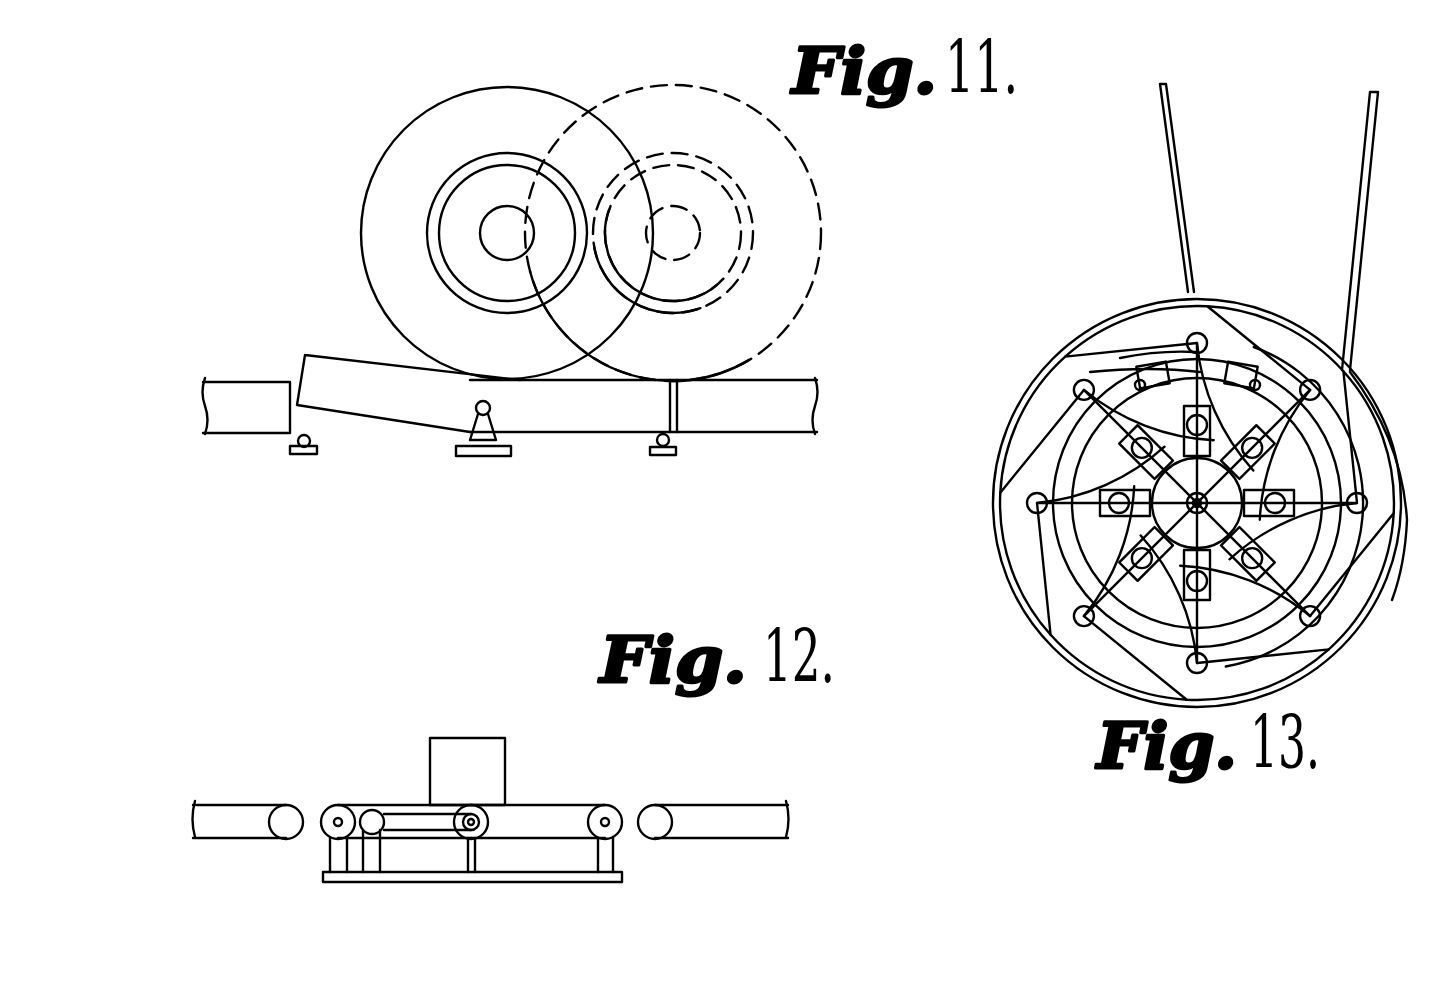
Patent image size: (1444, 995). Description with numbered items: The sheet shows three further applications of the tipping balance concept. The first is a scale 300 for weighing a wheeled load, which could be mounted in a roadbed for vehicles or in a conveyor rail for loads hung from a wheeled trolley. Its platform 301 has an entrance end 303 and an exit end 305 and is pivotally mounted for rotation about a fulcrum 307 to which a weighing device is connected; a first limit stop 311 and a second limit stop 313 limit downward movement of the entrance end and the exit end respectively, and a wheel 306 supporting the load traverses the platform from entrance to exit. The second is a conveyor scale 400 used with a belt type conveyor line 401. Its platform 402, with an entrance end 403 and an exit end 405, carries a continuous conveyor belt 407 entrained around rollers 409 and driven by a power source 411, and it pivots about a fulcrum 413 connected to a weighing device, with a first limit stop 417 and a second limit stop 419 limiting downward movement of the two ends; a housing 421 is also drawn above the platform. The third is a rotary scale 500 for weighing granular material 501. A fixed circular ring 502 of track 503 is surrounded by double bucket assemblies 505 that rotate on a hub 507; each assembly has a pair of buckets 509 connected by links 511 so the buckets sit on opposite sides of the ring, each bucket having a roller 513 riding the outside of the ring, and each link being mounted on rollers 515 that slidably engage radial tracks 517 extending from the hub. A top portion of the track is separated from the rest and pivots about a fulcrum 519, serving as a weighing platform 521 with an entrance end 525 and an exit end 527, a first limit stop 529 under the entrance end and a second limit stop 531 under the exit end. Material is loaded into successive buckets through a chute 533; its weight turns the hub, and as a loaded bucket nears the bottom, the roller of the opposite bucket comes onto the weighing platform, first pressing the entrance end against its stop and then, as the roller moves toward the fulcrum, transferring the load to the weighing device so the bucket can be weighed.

In FIG. 11, the scale 300 is at (296, 205).
In FIG. 11, the platform 301 is at (573, 432).
In FIG. 11, the entrance end 303 is at (305, 357).
In FIG. 11, the exit end 305 is at (681, 396).
In FIG. 11, the wheel 306 is at (404, 130).
In FIG. 11, the fulcrum 307 is at (475, 408).
In FIG. 11, the first limit stop 311 is at (303, 454).
In FIG. 11, the second limit stop 313 is at (665, 457).
In FIG. 12, the conveyor scale 400 is at (318, 696).
In FIG. 12, the belt type conveyor line 401 is at (230, 803).
In FIG. 12, the platform 402 is at (548, 803).
In FIG. 12, the entrance end 403 is at (324, 812).
In FIG. 12, the exit end 405 is at (622, 810).
In FIG. 12, the continuous conveyor belt 407 is at (404, 803).
In FIG. 12, the rollers 409 is at (596, 824).
In FIG. 12, the power source 411 is at (386, 855).
In FIG. 12, the fulcrum 413 is at (482, 830).
In FIG. 12, the first limit stop 417 is at (328, 852).
In FIG. 12, the second limit stop 419 is at (616, 855).
In FIG. 12, the housing 421 is at (478, 738).
In FIG. 13, the rotary scale 500 is at (1036, 288).
In FIG. 13, the granular material 501 is at (1335, 432).
In FIG. 13, the fixed circular ring 502 is at (1040, 548).
In FIG. 13, the track 503 is at (1044, 618).
In FIG. 13, the double bucket assemblies 505 is at (1158, 342).
In FIG. 13, the hub 507 is at (1082, 660).
In FIG. 13, the buckets 509 is at (1090, 346).
In FIG. 13, the links 511 is at (1130, 430).
In FIG. 13, the roller 513 is at (1200, 336).
In FIG. 13, the rollers 515 is at (1105, 503).
In FIG. 13, the radial tracks 517 is at (1130, 472).
In FIG. 13, the fulcrum 519 is at (1240, 362).
In FIG. 13, the weighing platform 521 is at (1230, 368).
In FIG. 13, the entrance end 525 is at (1062, 352).
In FIG. 13, the exit end 527 is at (1300, 360).
In FIG. 13, the first limit stop 529 is at (1092, 372).
In FIG. 13, the second limit stop 531 is at (1350, 320).
In FIG. 13, the chute 533 is at (1368, 134).